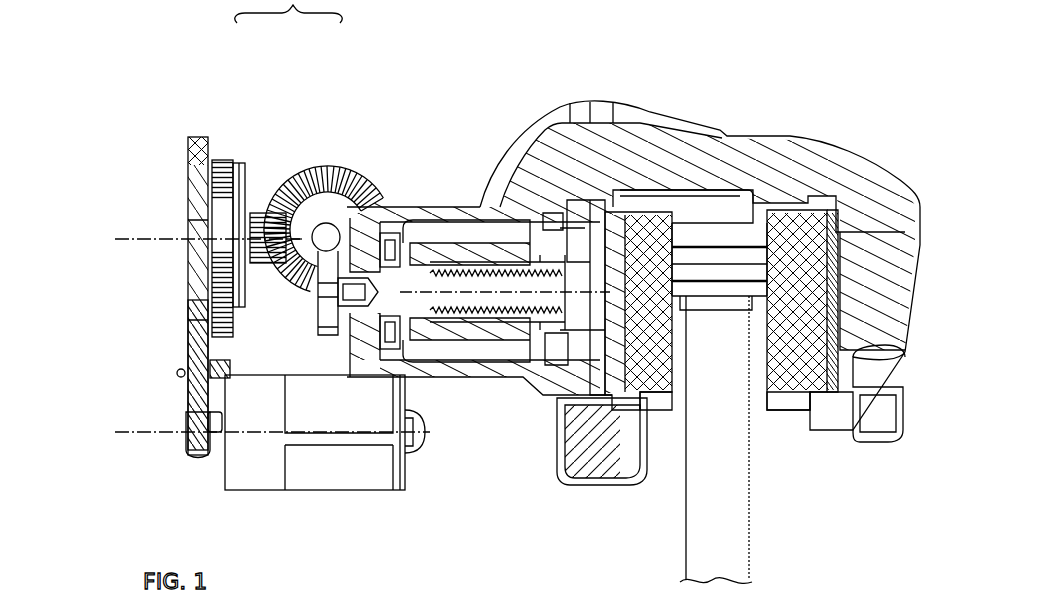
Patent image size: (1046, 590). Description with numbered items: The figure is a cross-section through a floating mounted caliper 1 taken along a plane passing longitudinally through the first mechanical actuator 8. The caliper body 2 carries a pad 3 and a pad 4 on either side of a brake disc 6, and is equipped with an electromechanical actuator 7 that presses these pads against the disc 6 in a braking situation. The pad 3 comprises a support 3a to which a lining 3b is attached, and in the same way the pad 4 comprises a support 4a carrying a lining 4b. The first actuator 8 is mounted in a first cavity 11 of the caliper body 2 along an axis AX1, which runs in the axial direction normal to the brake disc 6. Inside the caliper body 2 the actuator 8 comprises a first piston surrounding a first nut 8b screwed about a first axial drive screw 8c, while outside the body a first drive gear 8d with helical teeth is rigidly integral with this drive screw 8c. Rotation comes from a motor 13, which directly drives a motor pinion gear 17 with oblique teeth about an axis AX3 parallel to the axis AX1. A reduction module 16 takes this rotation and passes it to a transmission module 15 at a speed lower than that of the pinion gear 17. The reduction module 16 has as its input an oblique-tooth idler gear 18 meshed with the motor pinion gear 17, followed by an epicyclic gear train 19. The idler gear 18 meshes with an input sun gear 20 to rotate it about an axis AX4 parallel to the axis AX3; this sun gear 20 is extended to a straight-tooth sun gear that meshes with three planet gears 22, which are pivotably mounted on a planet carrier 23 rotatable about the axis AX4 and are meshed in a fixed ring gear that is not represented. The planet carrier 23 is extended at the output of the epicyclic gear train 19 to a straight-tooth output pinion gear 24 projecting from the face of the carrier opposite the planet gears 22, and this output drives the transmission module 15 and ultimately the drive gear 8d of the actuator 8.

The caliper 1 is at (829, 105).
The caliper body 2 is at (870, 165).
The pad 3 is at (645, 212).
The support 3a is at (630, 427).
The lining 3b is at (646, 420).
The pad 4 is at (788, 212).
The support 4a is at (820, 373).
The lining 4b is at (790, 367).
The brake disc 6 is at (716, 439).
The electromechanical actuator 7 is at (478, 492).
The first mechanical actuator 8 is at (415, 207).
The first nut 8b is at (533, 323).
The first axial drive screw 8c is at (410, 300).
The first drive gear 8d is at (318, 330).
The first cavity 11 is at (467, 210).
The motor 13 is at (257, 470).
The transmission module 15 is at (347, 128).
The reduction module 16 is at (203, 108).
The motor pinion gear 17 is at (203, 453).
The idler gear 18 is at (187, 392).
The epicyclic gear train 19 is at (160, 207).
The input sun gear 20 is at (197, 200).
The planet gears 22 is at (227, 160).
The planet carrier 23 is at (247, 177).
The output pinion gear 24 is at (266, 268).
The axis AX1 is at (520, 292).
The axis AX3 is at (140, 440).
The axis AX4 is at (137, 242).